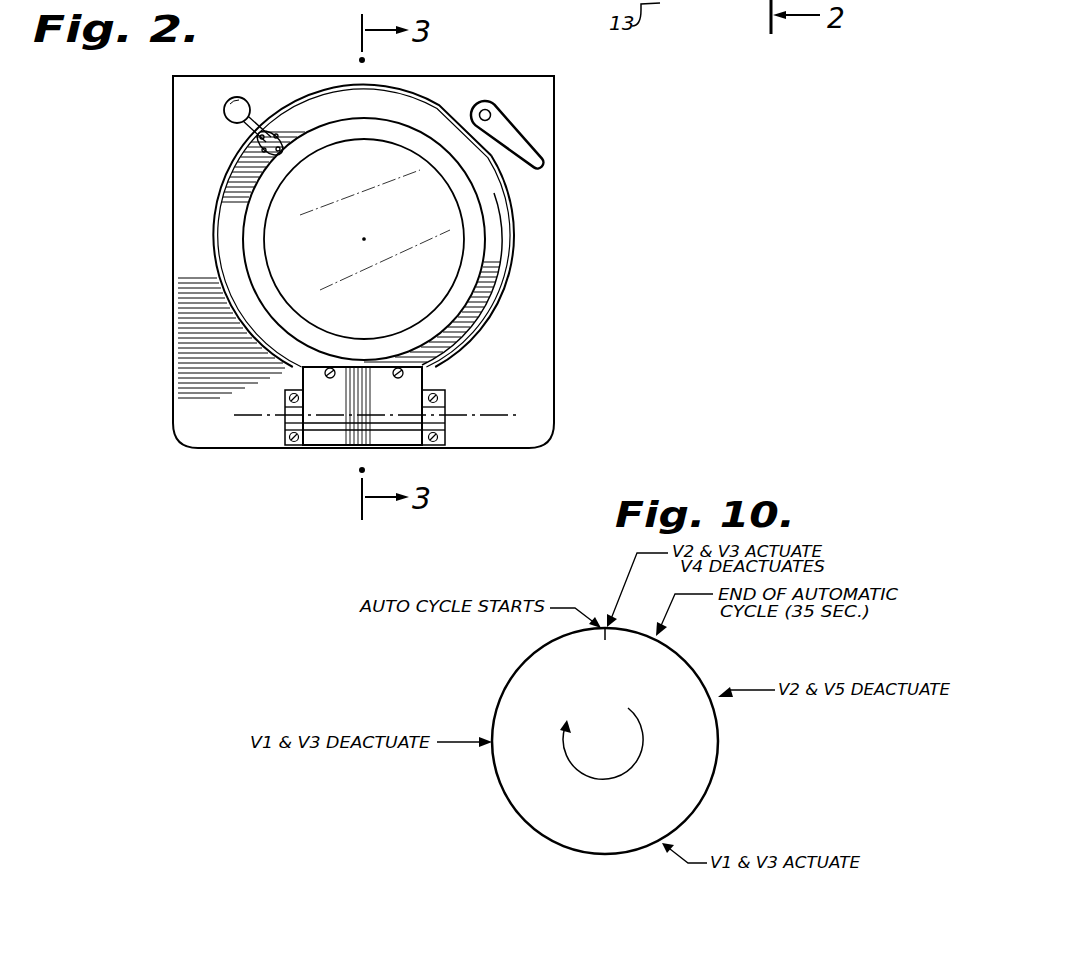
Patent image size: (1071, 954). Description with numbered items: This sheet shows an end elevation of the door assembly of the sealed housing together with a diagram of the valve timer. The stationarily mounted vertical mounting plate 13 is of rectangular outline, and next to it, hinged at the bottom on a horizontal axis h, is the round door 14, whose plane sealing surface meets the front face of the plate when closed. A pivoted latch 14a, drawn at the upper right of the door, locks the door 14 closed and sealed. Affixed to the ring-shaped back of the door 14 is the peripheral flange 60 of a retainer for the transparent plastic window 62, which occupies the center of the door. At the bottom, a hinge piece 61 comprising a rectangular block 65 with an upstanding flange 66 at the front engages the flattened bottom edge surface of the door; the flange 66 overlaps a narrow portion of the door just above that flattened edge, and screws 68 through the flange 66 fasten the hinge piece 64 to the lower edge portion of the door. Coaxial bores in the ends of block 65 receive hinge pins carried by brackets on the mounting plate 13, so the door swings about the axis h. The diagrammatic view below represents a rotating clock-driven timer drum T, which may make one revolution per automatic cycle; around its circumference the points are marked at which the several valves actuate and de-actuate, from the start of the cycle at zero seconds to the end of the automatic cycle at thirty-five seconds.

In FIG. 2, the mounting plate 13 is at (540, 349).
In FIG. 2, the round door 14 is at (526, 222).
In FIG. 2, the pivoted latch 14a is at (468, 120).
In FIG. 2, the peripheral flange 60 is at (497, 272).
In FIG. 2, the hinge piece 61 is at (236, 252).
In FIG. 2, the transparent plastic window 62 is at (364, 239).
In FIG. 2, the hinge piece 64 is at (337, 428).
In FIG. 2, the rectangular block 65 is at (400, 413).
In FIG. 2, the upstanding flange 66 is at (418, 389).
In FIG. 2, the screws 68 is at (398, 367).
In FIG. 2, the horizontal axis h is at (495, 418).
In FIG. 10, the timer drum T is at (516, 842).